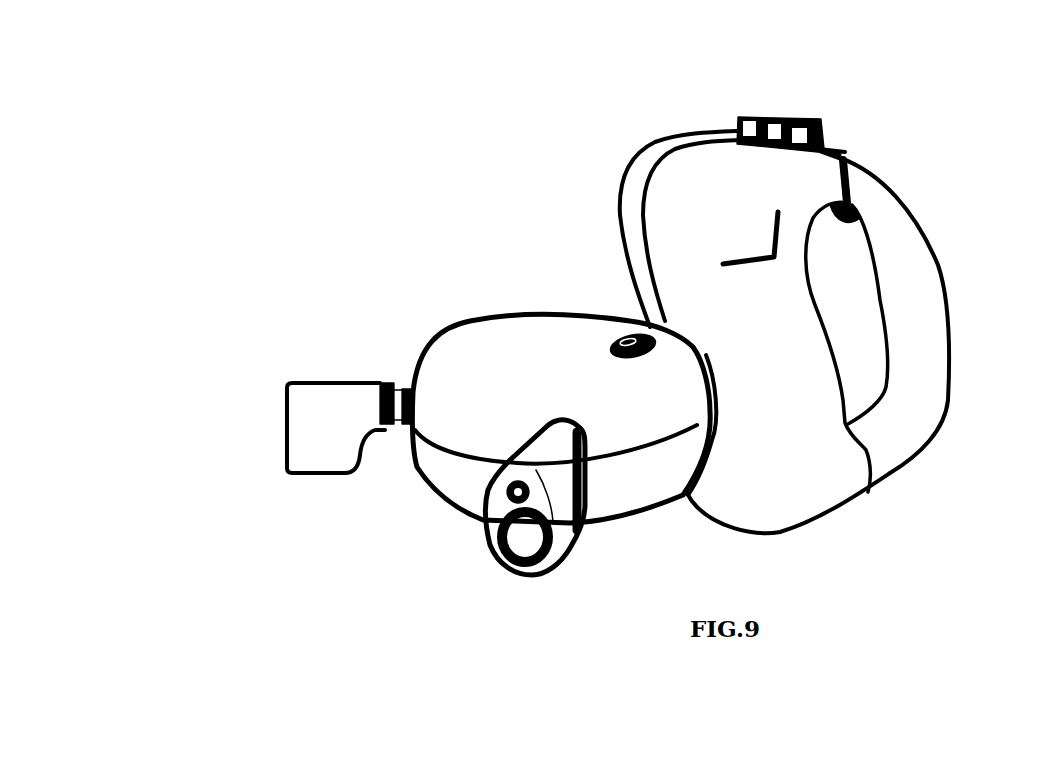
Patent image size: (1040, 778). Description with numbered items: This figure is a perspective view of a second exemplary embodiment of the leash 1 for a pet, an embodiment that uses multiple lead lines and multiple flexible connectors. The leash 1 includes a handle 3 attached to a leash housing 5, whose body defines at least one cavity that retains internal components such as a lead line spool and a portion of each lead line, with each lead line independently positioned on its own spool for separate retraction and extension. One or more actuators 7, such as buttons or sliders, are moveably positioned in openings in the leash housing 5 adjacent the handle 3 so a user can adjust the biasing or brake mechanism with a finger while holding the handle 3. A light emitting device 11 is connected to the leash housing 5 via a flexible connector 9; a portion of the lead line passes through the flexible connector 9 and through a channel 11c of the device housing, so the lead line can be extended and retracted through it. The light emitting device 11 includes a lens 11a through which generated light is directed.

The leash 1 is at (584, 388).
The handle 3 is at (920, 287).
The leash housing 5 is at (563, 253).
The actuator 7 is at (813, 112).
The flexible connector 9 is at (387, 383).
The light emitting device 11 is at (320, 423).
The lens 11a is at (518, 547).
The channel 11c is at (512, 494).